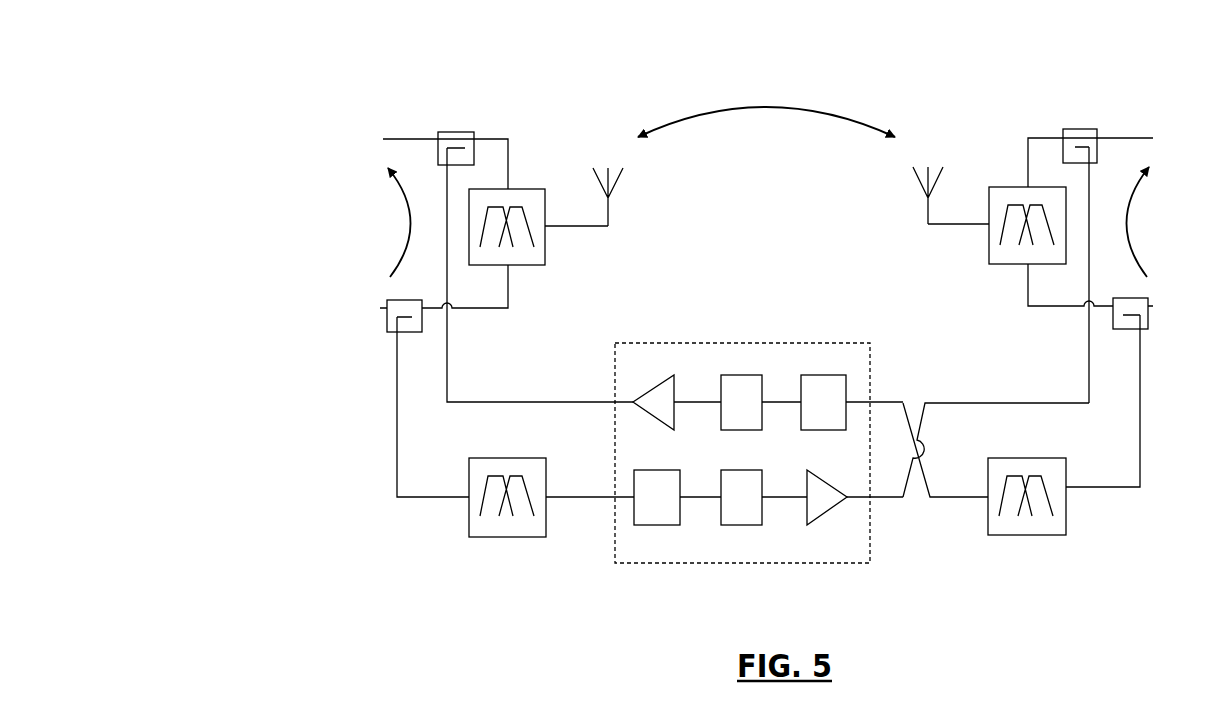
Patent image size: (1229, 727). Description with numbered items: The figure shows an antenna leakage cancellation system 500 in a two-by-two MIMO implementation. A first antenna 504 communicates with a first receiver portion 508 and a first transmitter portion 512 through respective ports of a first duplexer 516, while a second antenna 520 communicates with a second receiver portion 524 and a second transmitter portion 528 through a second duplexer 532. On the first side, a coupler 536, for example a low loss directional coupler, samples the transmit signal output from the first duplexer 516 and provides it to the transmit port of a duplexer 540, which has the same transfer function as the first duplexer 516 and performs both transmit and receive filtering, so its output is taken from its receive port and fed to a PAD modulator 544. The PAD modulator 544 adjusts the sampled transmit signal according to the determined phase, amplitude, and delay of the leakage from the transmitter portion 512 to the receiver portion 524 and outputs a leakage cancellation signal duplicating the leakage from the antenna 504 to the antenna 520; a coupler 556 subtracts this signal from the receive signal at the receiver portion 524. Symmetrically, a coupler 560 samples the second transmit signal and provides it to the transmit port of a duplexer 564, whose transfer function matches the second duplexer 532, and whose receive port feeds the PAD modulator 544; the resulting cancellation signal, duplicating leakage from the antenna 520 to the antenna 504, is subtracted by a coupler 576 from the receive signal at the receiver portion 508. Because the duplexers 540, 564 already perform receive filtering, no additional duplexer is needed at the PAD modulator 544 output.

The antenna leakage cancellation system 500 is at (306, 73).
The first antenna 504 is at (603, 184).
The first receiver portion 508 is at (491, 139).
The first transmitter portion 512 is at (483, 308).
The first duplexer 516 is at (546, 251).
The second antenna 520 is at (935, 183).
The second receiver portion 524 is at (1028, 138).
The second transmitter portion 528 is at (1050, 306).
The second duplexer 532 is at (989, 260).
The coupler 536 is at (392, 332).
The duplexer 540 is at (503, 537).
The PAD modulator 544 is at (745, 343).
The coupler 556 is at (1085, 129).
The coupler 560 is at (1145, 298).
The duplexer 564 is at (1015, 535).
The coupler 576 is at (455, 132).